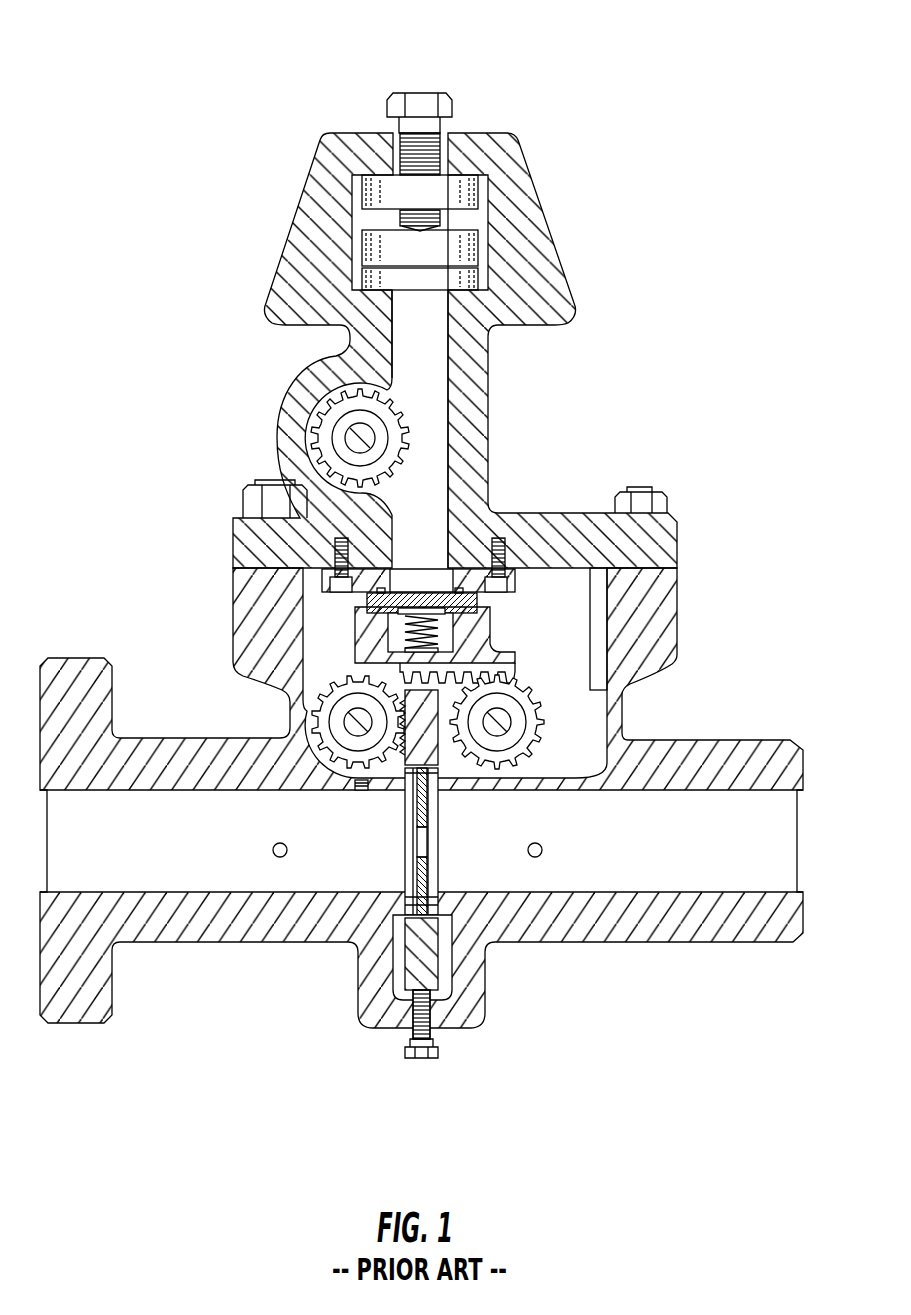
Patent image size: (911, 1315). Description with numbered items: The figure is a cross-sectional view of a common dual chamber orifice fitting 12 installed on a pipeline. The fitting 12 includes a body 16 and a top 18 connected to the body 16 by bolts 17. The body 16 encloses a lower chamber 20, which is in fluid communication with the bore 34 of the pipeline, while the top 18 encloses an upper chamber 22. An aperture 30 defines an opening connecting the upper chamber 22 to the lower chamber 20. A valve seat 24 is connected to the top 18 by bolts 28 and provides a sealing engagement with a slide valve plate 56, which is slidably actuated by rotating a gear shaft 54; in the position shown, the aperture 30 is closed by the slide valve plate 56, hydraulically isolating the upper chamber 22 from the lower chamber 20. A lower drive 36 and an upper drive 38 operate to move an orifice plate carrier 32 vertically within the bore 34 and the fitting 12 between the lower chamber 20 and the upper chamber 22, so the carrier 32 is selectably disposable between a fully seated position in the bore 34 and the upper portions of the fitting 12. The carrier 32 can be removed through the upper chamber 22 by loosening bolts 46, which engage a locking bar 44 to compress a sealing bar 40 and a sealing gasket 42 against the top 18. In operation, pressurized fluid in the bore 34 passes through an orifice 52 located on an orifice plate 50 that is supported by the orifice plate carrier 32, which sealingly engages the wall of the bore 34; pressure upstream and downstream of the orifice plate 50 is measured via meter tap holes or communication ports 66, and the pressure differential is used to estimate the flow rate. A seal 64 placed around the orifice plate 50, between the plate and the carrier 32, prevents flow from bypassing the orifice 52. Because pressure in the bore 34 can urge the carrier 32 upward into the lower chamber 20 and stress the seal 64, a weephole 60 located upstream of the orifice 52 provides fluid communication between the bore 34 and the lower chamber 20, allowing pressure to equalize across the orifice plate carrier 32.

The dual chamber orifice fitting 12 is at (104, 40).
The body 16 is at (245, 617).
The bolts 17 is at (662, 500).
The top 18 is at (478, 420).
The lower chamber 20 is at (577, 608).
The upper chamber 22 is at (433, 395).
The valve seat 24 is at (515, 578).
The bolts 28 is at (492, 562).
The aperture 30 is at (405, 580).
The orifice plate carrier 32 is at (435, 940).
The bore 34 is at (153, 858).
The lower drive 36 is at (328, 718).
The upper drive 38 is at (295, 410).
The sealing bar 40 is at (368, 246).
The sealing gasket 42 is at (368, 278).
The locking bar 44 is at (368, 185).
The bolts 46 is at (420, 93).
The orifice plate 50 is at (415, 876).
The orifice 52 is at (422, 850).
The gear shaft 54 is at (518, 698).
The slide valve plate 56 is at (485, 645).
The weephole 60 is at (358, 792).
The seal 64 is at (430, 778).
The communication ports 66 is at (277, 843).